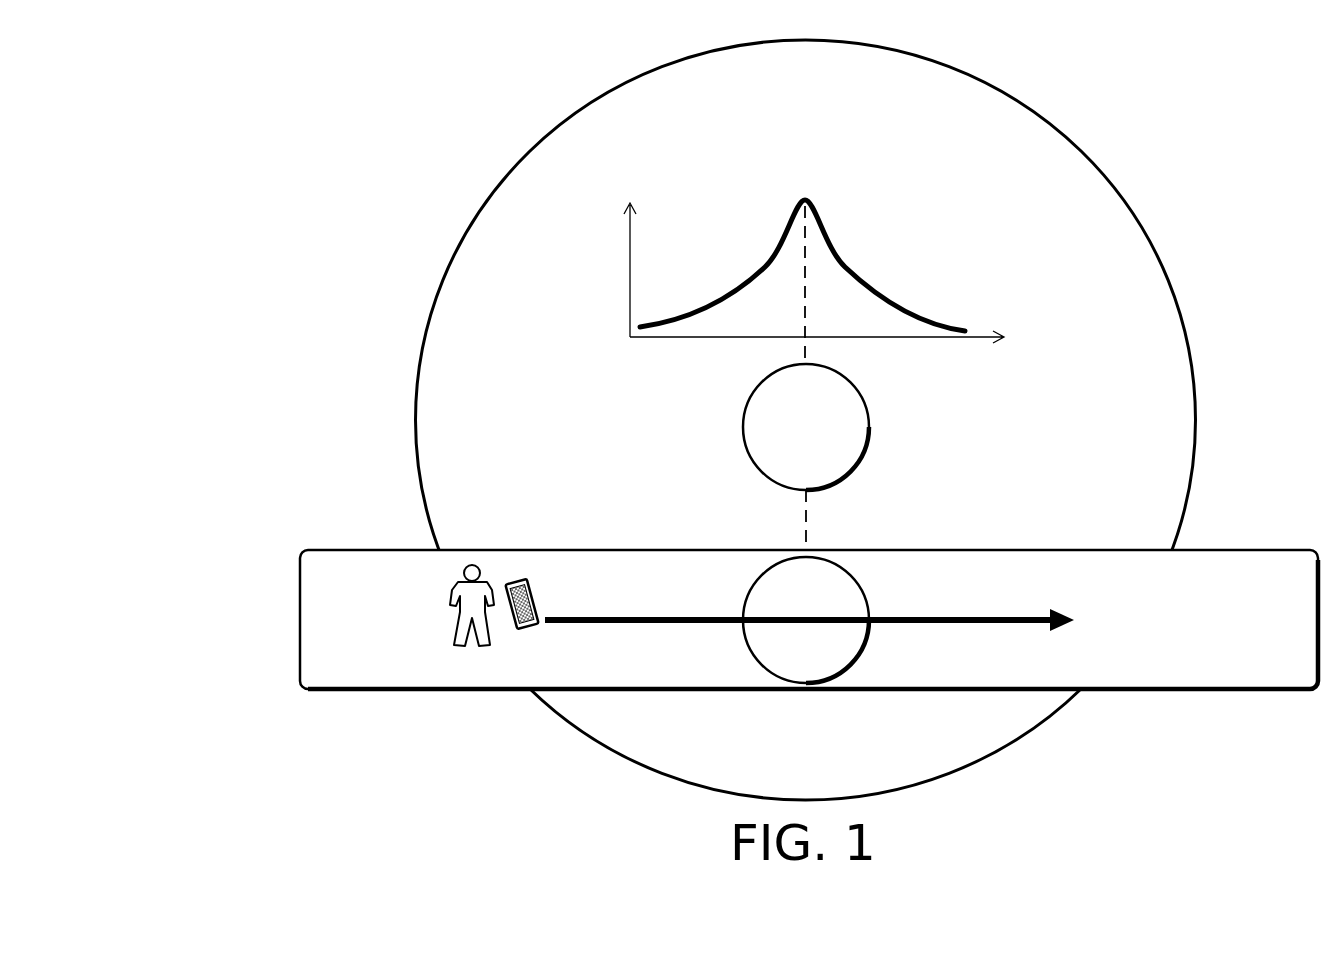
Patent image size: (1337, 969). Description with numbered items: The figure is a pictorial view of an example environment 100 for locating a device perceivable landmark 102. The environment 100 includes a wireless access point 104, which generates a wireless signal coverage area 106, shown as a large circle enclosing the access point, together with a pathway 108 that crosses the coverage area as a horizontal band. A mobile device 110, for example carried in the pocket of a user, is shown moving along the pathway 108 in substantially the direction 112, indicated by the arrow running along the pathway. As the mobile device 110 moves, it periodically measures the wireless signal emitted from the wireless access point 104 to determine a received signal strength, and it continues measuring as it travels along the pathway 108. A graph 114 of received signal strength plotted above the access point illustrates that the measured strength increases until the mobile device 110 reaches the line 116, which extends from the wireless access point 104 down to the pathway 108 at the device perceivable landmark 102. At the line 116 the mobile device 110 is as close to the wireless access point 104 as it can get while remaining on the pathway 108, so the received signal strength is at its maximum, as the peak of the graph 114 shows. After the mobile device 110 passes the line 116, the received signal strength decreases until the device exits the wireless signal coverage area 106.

The environment 100 is at (296, 96).
The device perceivable landmark 102 is at (806, 620).
The wireless access point 104 is at (806, 427).
The wireless signal coverage area 106 is at (806, 420).
The pathway 108 is at (809, 619).
The mobile device 110 is at (519, 628).
The direction 112 is at (624, 622).
The graph 114 is at (898, 252).
The line 116 is at (805, 533).